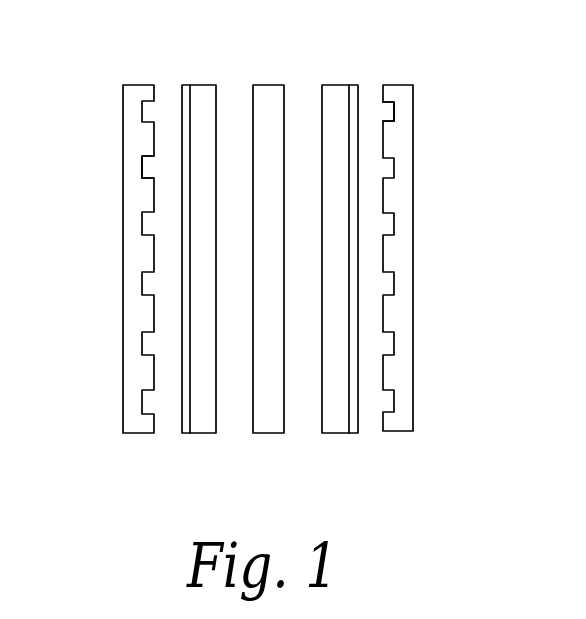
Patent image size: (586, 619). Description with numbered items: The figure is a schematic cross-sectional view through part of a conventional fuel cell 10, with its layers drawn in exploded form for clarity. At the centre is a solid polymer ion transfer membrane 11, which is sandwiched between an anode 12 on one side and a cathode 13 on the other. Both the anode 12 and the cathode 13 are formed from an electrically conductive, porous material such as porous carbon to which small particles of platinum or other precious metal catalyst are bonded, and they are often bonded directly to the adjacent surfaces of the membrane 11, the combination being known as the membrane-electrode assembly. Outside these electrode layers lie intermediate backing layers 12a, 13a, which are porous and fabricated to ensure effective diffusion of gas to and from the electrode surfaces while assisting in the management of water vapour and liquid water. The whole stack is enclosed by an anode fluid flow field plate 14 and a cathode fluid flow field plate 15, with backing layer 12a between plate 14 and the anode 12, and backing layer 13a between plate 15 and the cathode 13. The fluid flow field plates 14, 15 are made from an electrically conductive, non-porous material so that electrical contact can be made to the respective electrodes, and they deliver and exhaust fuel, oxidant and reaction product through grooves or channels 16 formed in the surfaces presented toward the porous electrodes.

The fuel cell 10 is at (128, 70).
The solid polymer ion transfer membrane 11 is at (268, 420).
The anode 12 is at (201, 433).
The intermediate backing layer 12a is at (188, 86).
The cathode 13 is at (340, 418).
The intermediate backing layer 13a is at (353, 88).
The anode fluid flow field plate 14 is at (135, 424).
The cathode fluid flow field plate 15 is at (400, 422).
The grooves or channels 16 is at (145, 170).